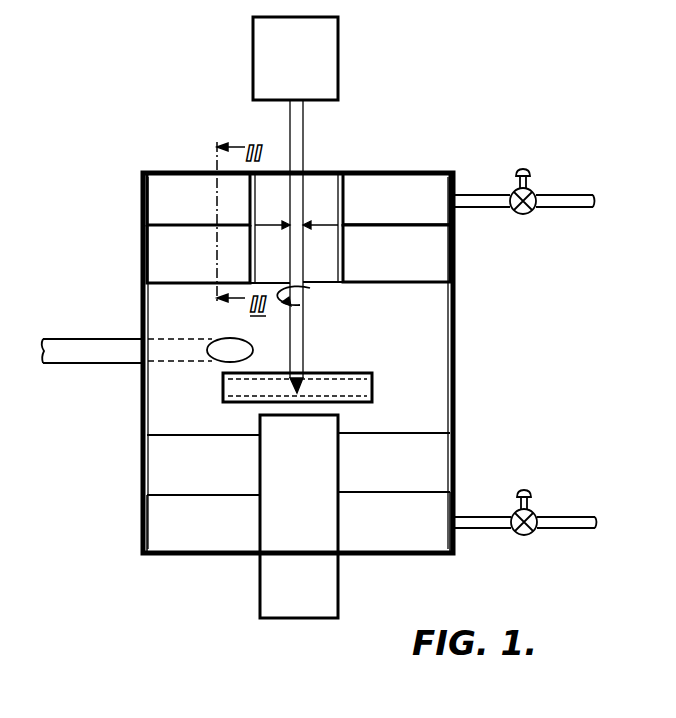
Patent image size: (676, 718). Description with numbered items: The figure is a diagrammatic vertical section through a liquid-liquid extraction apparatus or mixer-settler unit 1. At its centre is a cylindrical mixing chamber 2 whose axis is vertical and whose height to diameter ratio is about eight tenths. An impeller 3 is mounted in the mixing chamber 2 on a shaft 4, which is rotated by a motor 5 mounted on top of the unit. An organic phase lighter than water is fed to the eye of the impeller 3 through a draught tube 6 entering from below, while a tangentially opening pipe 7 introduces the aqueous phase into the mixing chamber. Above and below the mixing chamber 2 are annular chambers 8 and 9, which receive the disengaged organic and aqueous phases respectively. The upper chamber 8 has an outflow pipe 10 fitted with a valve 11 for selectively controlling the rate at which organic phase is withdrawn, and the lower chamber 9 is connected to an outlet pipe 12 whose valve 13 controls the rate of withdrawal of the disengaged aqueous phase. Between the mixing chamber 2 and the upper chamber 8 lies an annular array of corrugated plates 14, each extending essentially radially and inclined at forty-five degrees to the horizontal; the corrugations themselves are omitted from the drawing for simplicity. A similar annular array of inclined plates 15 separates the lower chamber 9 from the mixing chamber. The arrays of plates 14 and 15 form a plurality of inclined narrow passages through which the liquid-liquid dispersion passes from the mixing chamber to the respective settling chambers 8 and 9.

The mixer-settler unit 1 is at (461, 352).
The mixing chamber 2 is at (400, 348).
The impeller 3 is at (362, 388).
The shaft 4 is at (304, 129).
The motor 5 is at (339, 58).
The draught tube 6 is at (339, 590).
The tangentially opening pipe 7 is at (103, 349).
The annular chamber 8 is at (198, 212).
The annular chamber 9 is at (206, 537).
The outflow pipe 10 is at (559, 195).
The valve 11 is at (528, 168).
The outlet pipe 12 is at (548, 532).
The valve 13 is at (532, 492).
The corrugated plates 14 is at (205, 277).
The inclined plates 15 is at (213, 478).